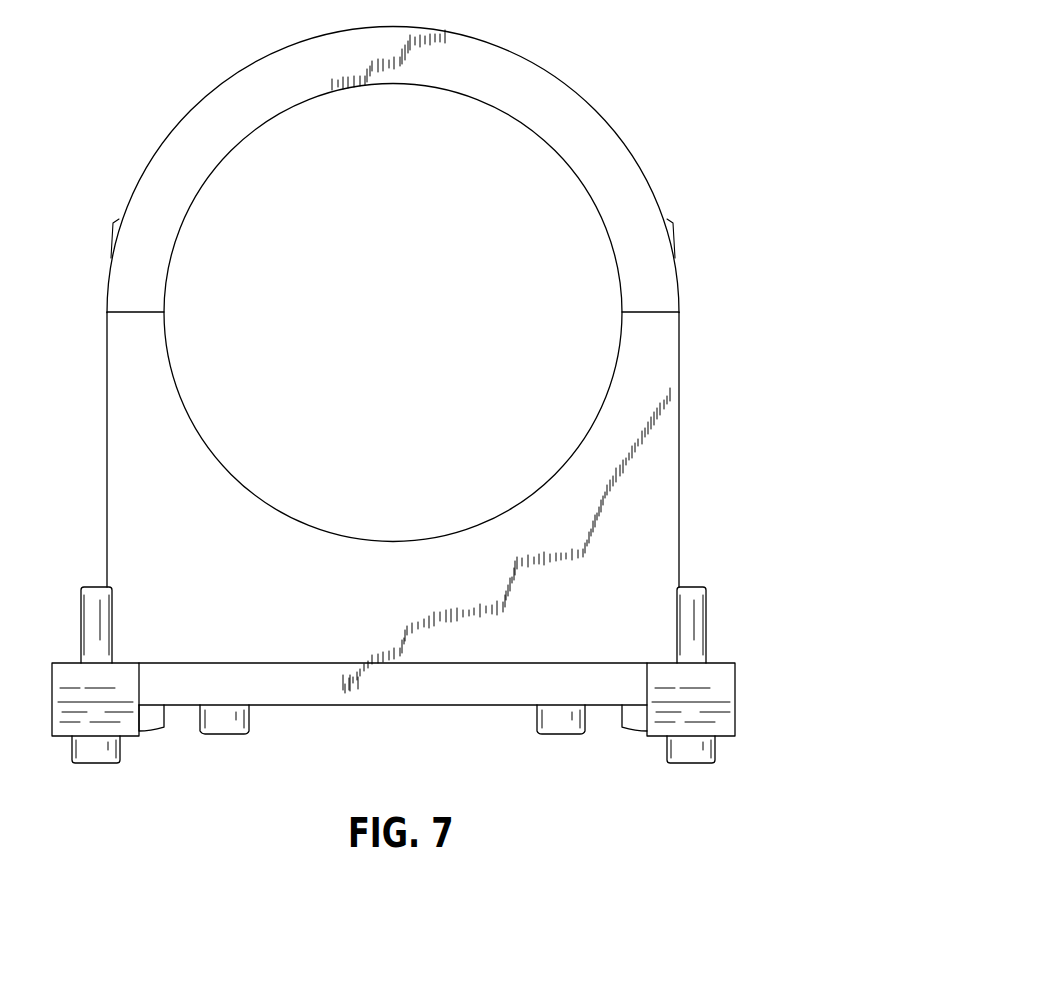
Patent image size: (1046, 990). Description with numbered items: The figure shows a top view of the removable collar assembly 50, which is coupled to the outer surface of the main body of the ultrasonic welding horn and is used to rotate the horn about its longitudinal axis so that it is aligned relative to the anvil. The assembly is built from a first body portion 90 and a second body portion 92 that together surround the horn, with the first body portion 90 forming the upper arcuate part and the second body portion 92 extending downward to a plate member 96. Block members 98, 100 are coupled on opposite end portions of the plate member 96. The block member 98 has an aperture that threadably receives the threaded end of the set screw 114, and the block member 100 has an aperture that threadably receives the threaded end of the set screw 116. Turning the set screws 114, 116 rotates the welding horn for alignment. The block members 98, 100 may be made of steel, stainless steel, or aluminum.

The removable collar assembly 50 is at (394, 418).
The first body portion 90 is at (515, 76).
The second body portion 92 is at (652, 378).
The plate member 96 is at (421, 692).
The block member 98 is at (52, 702).
The block member 100 is at (718, 678).
The set screw 114 is at (100, 754).
The set screw 116 is at (690, 763).